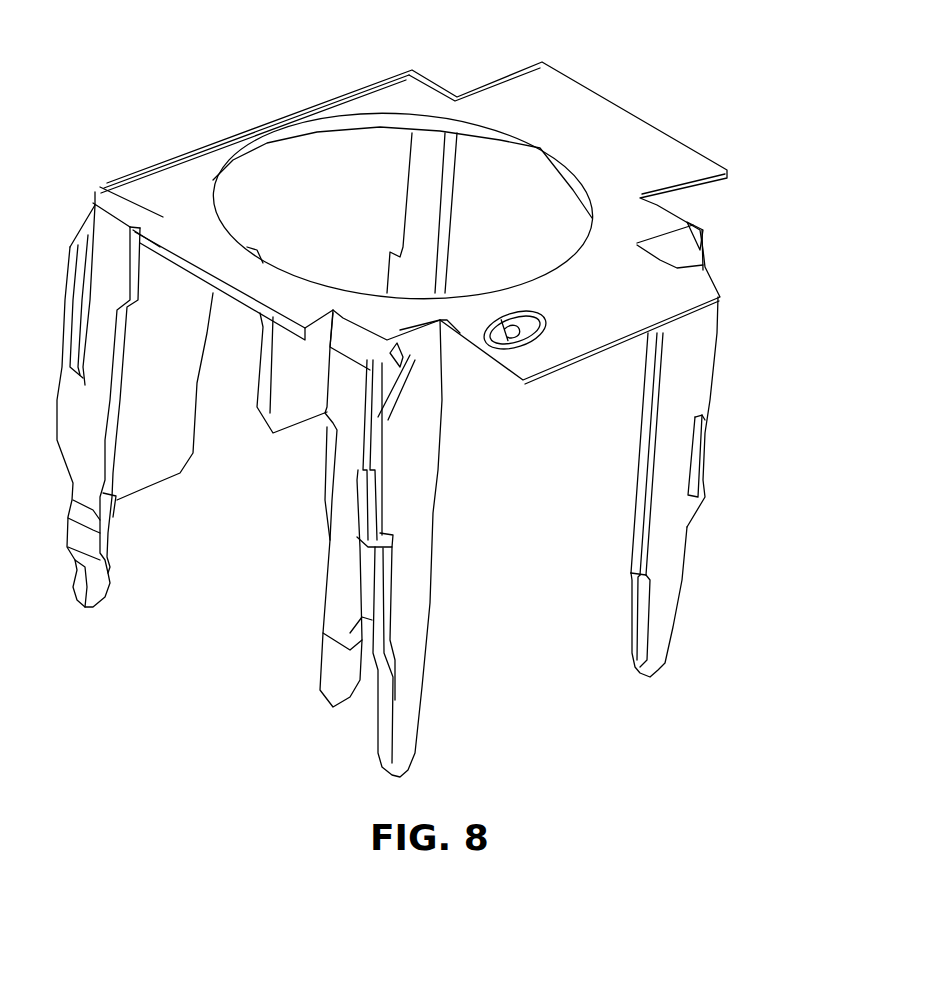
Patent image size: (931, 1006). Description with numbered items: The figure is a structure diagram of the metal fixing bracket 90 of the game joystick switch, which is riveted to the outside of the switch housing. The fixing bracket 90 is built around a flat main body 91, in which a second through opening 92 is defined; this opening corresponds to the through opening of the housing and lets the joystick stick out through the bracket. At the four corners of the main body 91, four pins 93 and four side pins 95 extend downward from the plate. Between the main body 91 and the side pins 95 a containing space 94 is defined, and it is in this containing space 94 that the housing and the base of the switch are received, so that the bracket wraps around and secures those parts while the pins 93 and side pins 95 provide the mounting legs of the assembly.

The metal fixing bracket 90 is at (192, 372).
The main body 91 is at (398, 223).
The second through opening 92 is at (403, 159).
The pins 93 is at (694, 602).
The containing space 94 is at (677, 436).
The side pins 95 is at (333, 543).